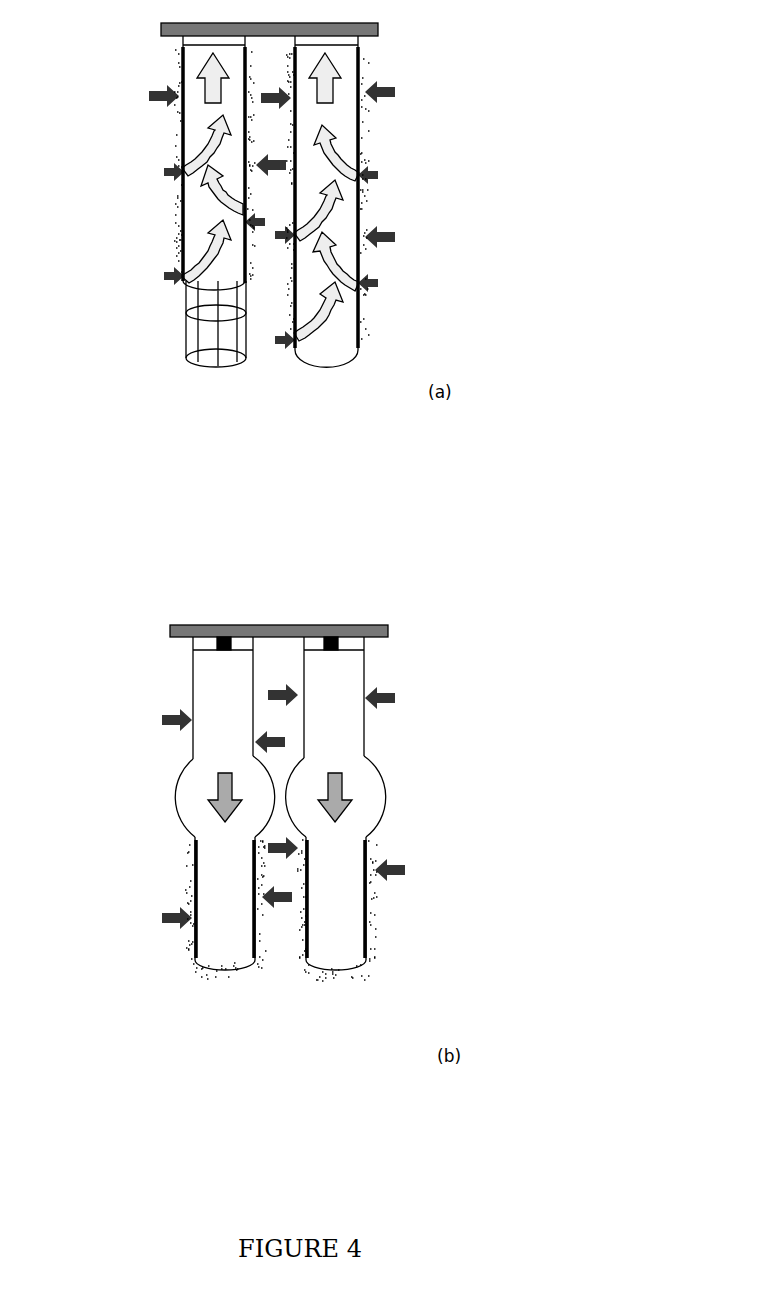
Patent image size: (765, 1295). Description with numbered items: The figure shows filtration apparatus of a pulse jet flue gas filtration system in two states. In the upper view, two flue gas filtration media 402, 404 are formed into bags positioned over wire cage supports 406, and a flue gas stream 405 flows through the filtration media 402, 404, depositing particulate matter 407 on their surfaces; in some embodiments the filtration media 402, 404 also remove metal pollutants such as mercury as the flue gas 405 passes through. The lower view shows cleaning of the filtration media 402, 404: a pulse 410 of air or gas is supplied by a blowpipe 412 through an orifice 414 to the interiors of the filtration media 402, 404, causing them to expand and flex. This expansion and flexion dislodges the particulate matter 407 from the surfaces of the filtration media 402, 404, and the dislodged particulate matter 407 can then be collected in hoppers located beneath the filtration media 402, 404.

The flue gas filtration media 402 is at (127, 120).
The flue gas filtration media 404 is at (415, 120).
The flue gas stream 405 is at (170, 277).
The wire cage support 406 is at (198, 362).
The particulate matter 407 is at (178, 208).
The pulse 410 is at (177, 800).
The blowpipe 412 is at (335, 623).
The orifice 414 is at (215, 642).